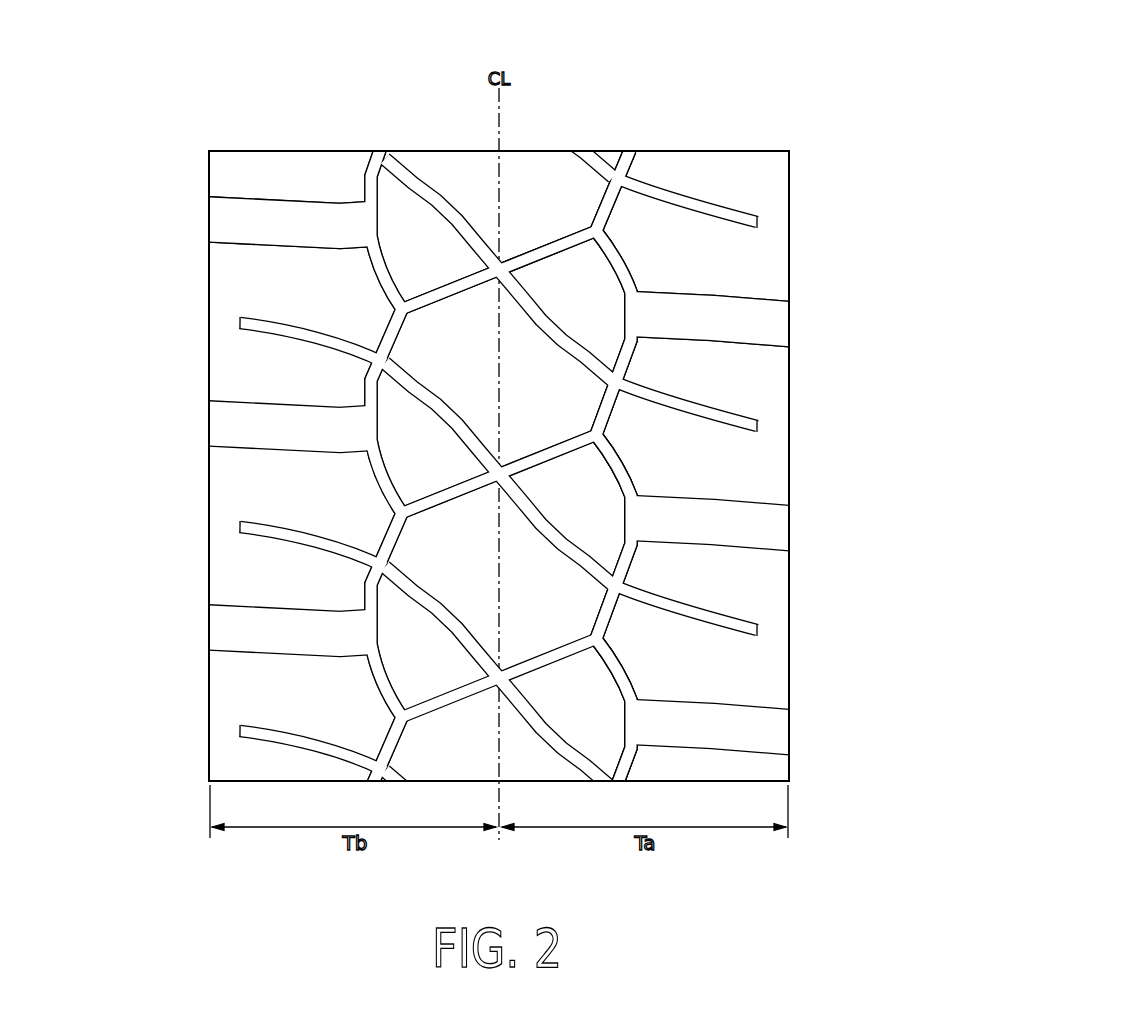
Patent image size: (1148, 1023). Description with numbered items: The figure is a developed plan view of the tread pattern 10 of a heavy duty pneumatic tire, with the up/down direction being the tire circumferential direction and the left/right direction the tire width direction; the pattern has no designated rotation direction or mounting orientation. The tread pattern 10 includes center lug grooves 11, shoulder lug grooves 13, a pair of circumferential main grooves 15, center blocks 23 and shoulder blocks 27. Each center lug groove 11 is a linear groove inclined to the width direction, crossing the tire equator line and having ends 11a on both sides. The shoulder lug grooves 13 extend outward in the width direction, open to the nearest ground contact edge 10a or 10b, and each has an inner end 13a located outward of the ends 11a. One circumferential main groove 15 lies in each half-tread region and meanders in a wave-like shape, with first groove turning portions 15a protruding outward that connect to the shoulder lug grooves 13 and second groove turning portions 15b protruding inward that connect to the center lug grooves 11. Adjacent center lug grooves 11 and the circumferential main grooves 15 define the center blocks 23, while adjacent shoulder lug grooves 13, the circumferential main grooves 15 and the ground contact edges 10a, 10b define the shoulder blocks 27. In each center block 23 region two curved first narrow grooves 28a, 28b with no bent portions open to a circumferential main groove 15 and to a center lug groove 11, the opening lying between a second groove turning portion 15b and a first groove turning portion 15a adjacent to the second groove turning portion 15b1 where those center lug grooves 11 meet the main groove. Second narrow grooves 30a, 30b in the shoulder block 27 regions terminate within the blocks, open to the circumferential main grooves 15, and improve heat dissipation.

The tread pattern 10 is at (808, 90).
The ground contact edge 10a is at (789, 622).
The ground contact edge 10b is at (209, 683).
The center lug groove 11 is at (533, 257).
The end of center lug groove 11a is at (402, 305).
The shoulder lug groove 13 is at (250, 203).
The inner end of shoulder lug groove 13a is at (357, 253).
The circumferential main groove 15 is at (363, 190).
The first groove turning portion 15a is at (357, 441).
The second groove turning portion 15b is at (405, 320).
The second groove turning portion 15b1 is at (395, 512).
The center block 23 is at (622, 250).
The shoulder block 27 is at (226, 366).
The first narrow groove 28a is at (545, 352).
The first narrow groove 28b is at (433, 197).
The second narrow groove 30a is at (676, 410).
The second narrow groove 30b is at (285, 340).